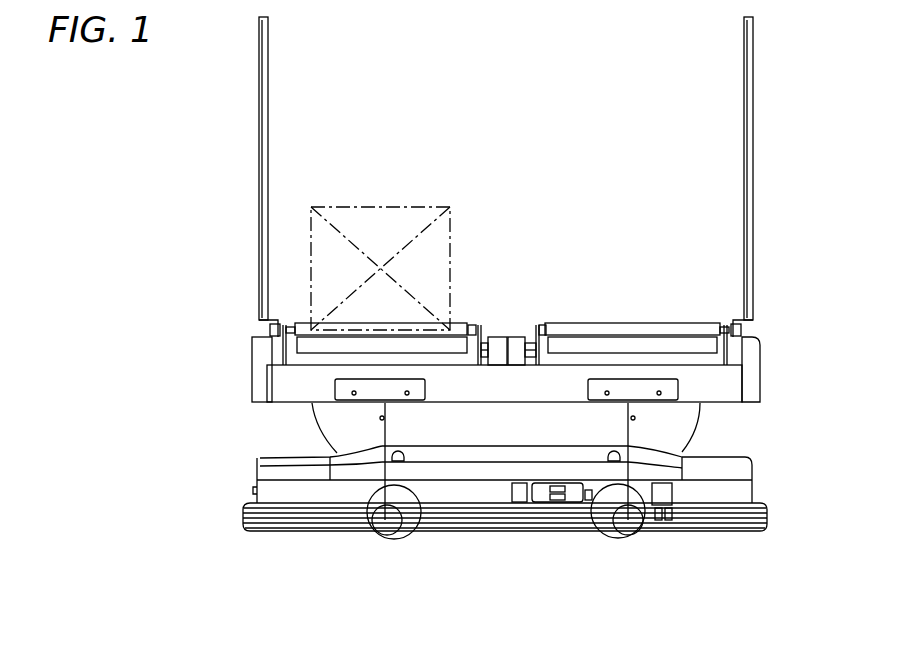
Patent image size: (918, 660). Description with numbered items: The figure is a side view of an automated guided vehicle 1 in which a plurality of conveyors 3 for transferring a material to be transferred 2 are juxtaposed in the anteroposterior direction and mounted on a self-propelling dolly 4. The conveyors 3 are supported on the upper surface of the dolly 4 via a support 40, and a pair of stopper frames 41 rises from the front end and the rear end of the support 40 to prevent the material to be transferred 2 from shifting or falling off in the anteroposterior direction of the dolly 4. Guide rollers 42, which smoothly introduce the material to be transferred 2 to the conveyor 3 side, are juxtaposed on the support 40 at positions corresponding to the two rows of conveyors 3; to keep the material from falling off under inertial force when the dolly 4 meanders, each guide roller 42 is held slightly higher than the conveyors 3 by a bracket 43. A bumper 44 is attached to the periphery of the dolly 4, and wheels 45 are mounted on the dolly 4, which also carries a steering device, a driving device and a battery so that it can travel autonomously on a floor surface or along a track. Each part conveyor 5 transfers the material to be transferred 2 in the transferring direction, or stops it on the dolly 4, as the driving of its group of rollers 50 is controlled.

The automated guided vehicle 1 is at (550, 98).
The material to be transferred 2 is at (432, 206).
The conveyor 3 is at (465, 266).
The dolly 4 is at (507, 538).
The part conveyor 5 is at (276, 347).
The support 40 is at (722, 402).
The stopper frame 41 is at (269, 108).
The guide roller 42 is at (462, 322).
The bracket 43 is at (288, 323).
The bumper 44 is at (294, 531).
The wheel 45 is at (400, 533).
The roller 50 is at (322, 348).